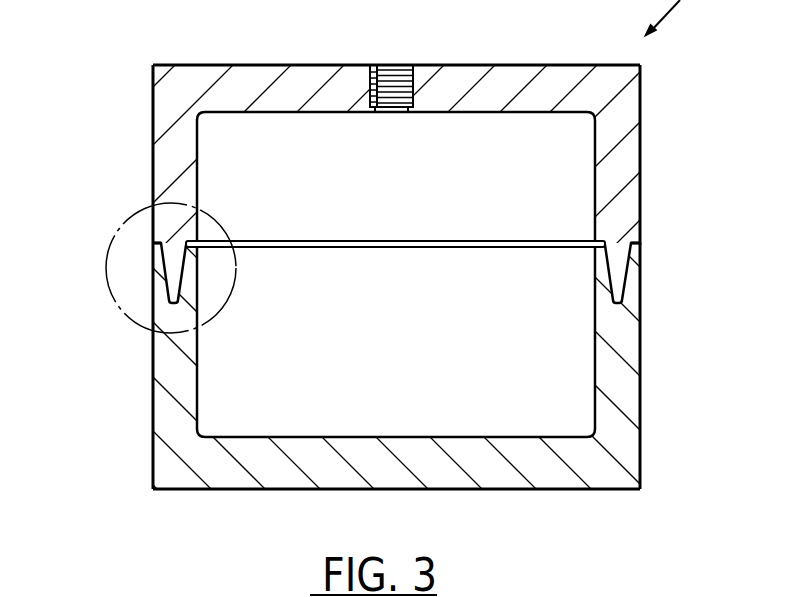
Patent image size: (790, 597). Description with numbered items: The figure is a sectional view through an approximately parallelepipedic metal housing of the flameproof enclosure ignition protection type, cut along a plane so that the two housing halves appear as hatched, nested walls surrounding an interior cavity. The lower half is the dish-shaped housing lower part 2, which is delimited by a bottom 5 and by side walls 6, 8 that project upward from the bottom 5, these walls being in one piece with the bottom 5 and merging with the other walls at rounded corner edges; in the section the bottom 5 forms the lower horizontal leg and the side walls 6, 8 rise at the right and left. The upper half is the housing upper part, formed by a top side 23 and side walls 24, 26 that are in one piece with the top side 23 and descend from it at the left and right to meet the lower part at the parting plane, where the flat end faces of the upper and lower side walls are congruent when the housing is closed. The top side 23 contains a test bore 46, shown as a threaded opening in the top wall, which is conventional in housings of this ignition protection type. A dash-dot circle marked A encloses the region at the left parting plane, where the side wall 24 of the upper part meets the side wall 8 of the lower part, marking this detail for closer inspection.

The housing lower part 2 is at (395, 275).
The bottom 5 is at (405, 482).
The side wall 6 is at (632, 360).
The side wall 8 is at (395, 386).
The top side 23 is at (513, 77).
The side wall 24 is at (395, 122).
The side wall 26 is at (640, 203).
The test bore 46 is at (400, 72).
The detail area A is at (107, 287).